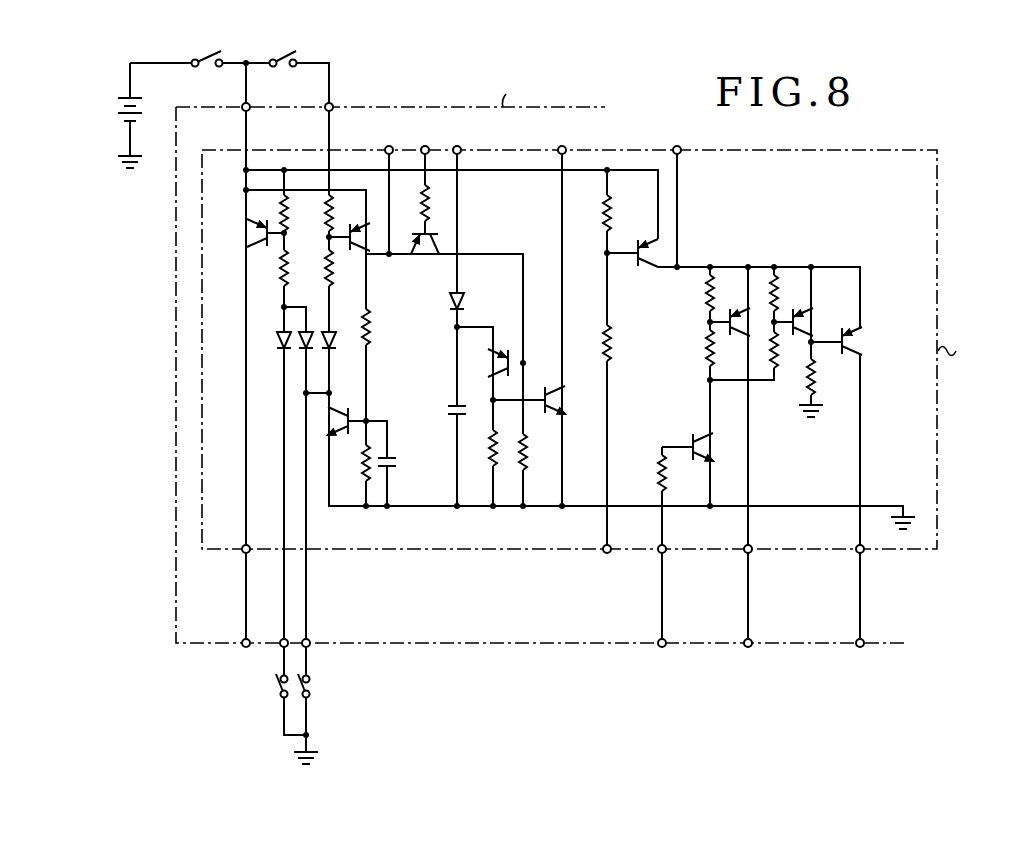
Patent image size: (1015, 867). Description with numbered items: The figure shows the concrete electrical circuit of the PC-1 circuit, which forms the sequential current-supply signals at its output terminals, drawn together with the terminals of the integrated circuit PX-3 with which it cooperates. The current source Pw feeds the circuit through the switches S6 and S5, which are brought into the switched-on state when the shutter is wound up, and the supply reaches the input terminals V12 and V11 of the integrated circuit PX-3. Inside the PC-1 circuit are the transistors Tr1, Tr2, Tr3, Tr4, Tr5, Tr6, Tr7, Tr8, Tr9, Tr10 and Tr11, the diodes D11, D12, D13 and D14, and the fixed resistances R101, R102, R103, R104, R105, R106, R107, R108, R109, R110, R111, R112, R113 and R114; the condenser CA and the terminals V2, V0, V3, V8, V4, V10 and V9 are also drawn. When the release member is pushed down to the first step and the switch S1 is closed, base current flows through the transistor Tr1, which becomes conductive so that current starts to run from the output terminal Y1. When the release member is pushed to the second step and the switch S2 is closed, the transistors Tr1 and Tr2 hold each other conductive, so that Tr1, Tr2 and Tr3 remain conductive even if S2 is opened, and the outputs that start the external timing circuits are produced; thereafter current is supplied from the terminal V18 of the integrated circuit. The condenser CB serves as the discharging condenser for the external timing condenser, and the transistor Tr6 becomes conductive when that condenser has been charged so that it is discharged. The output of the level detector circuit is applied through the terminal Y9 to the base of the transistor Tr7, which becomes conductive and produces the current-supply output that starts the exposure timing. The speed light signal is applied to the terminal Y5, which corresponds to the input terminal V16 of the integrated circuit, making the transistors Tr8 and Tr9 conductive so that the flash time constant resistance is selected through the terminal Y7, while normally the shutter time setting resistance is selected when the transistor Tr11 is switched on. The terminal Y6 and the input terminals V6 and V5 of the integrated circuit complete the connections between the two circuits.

The current source Pw is at (119, 115).
The switch S6 is at (207, 51).
The switch S5 is at (283, 51).
The switch S1 is at (272, 688).
The switch S2 is at (315, 688).
The integrated circuit PX-3 is at (501, 90).
The PC-1 circuit PC-1 is at (971, 350).
The transistor Tr1 is at (246, 233).
The transistor Tr2 is at (370, 237).
The transistor Tr3 is at (330, 421).
The transistor Tr4 is at (425, 255).
The transistor Tr5 is at (490, 363).
The transistor Tr6 is at (569, 400).
The transistor Tr7 is at (658, 253).
The transistor Tr8 is at (714, 447).
The transistor Tr9 is at (752, 322).
The transistor Tr10 is at (818, 322).
The transistor Tr11 is at (868, 341).
The fixed resistance R101 is at (305, 213).
The fixed resistance R102 is at (305, 268).
The fixed resistance R103 is at (350, 213).
The fixed resistance R104 is at (350, 268).
The fixed resistance R105 is at (387, 327).
The fixed resistance R106 is at (348, 463).
The fixed resistance R107 is at (478, 448).
The fixed resistance R108 is at (544, 452).
The fixed resistance R109 is at (628, 213).
The fixed resistance R110 is at (628, 343).
The fixed resistance R111 is at (695, 348).
The fixed resistance R112 is at (644, 473).
The fixed resistance R113 is at (795, 350).
The fixed resistance R114 is at (832, 377).
The diode D11 is at (270, 340).
The diode D12 is at (317, 329).
The diode D13 is at (345, 340).
The diode D14 is at (473, 300).
The capacitor CA is at (396, 465).
The condenser CB is at (447, 410).
The input terminal V12 is at (233, 99).
The input terminal V11 is at (317, 99).
The terminal V2 is at (391, 140).
The terminal V0 is at (427, 140).
The terminal V3 is at (459, 140).
The terminal V8 is at (564, 140).
The terminal V4 is at (679, 140).
The output terminal Y1 is at (242, 562).
The output terminal Y9 is at (609, 562).
The output terminal Y5 is at (672, 562).
The output terminal Y7 is at (759, 562).
The output terminal Y6 is at (871, 562).
The terminal V18 is at (246, 657).
The terminal V10 is at (278, 657).
The terminal V9 is at (316, 657).
The input terminal V16 is at (666, 657).
The input terminal V6 is at (747, 657).
The input terminal V5 is at (859, 657).